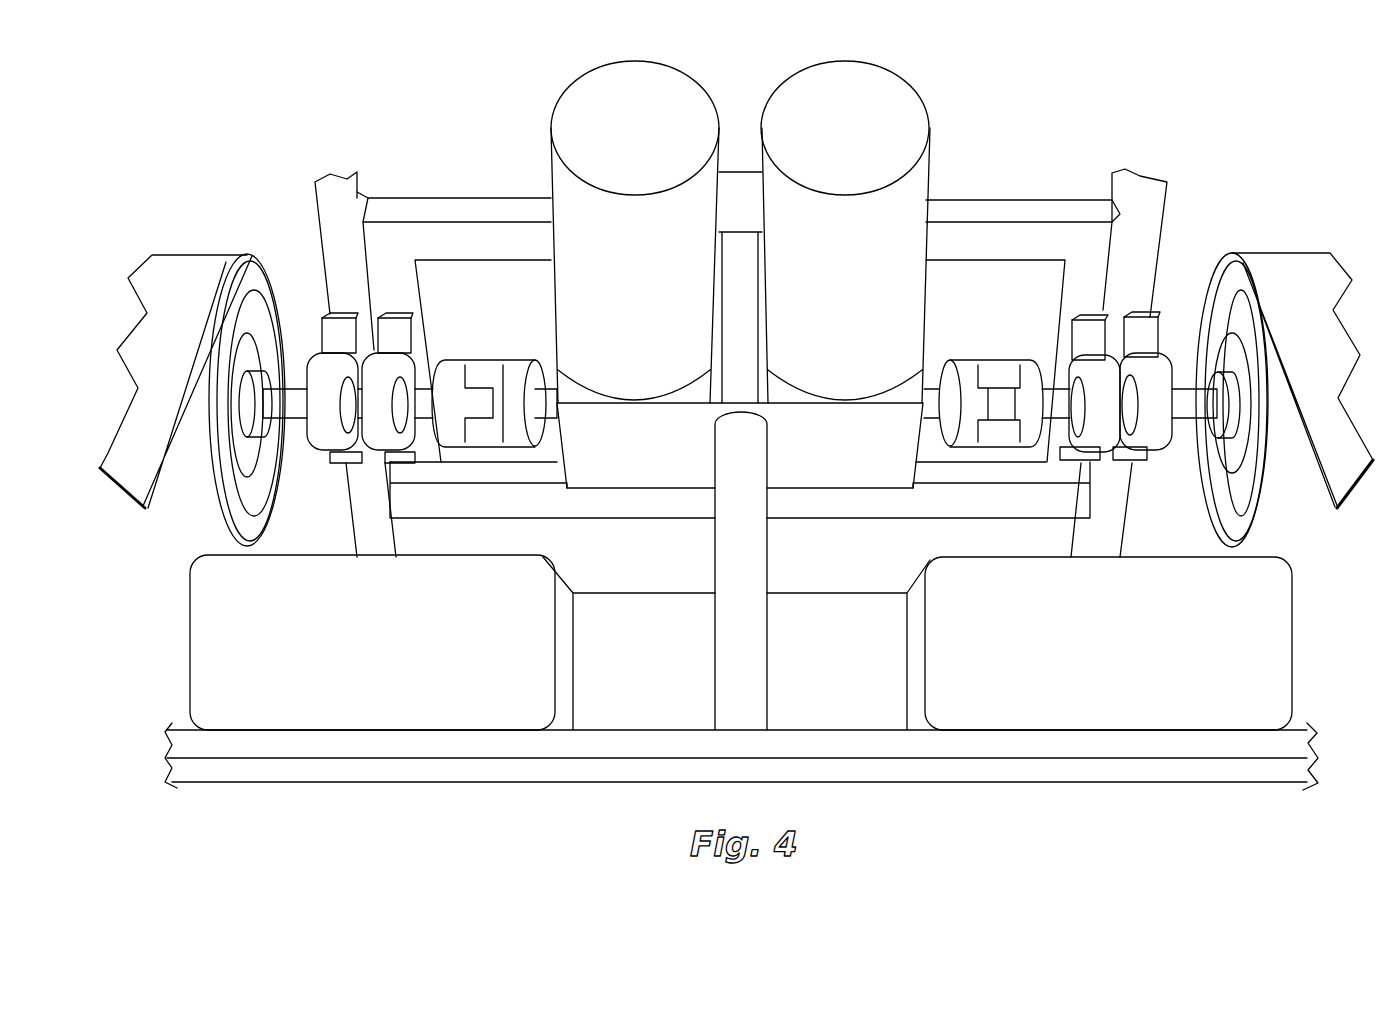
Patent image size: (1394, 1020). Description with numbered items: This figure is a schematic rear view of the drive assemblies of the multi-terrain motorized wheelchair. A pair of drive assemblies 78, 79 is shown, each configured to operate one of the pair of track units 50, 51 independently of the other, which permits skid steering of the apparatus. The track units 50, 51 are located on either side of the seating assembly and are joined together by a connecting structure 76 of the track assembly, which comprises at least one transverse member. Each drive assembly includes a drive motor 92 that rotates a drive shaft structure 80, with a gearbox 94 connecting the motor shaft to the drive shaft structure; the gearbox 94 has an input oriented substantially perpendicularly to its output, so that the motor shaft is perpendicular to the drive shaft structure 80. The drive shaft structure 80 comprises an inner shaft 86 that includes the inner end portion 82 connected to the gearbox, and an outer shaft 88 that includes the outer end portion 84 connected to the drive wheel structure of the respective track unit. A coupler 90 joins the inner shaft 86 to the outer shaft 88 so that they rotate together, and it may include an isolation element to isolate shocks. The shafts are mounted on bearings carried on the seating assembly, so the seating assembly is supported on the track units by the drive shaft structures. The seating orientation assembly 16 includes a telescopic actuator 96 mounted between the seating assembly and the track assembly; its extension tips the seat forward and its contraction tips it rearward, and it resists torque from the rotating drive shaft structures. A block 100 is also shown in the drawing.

The seating orientation assembly 16 is at (704, 558).
The track unit 50 is at (200, 248).
The track unit 51 is at (1296, 243).
The connecting structure 76 is at (785, 740).
The drive assembly 78 is at (504, 500).
The drive assembly 79 is at (1007, 502).
The drive shaft structure 80 is at (1036, 348).
The inner end portion 82 is at (927, 422).
The outer end portion 84 is at (1183, 407).
The inner shaft 86 is at (936, 400).
The outer shaft 88 is at (1128, 408).
The coupler 90 is at (997, 375).
The drive motor 92 is at (885, 103).
The gearbox 94 is at (697, 457).
The actuator 96 is at (744, 573).
The counterweight block 100 is at (408, 685).